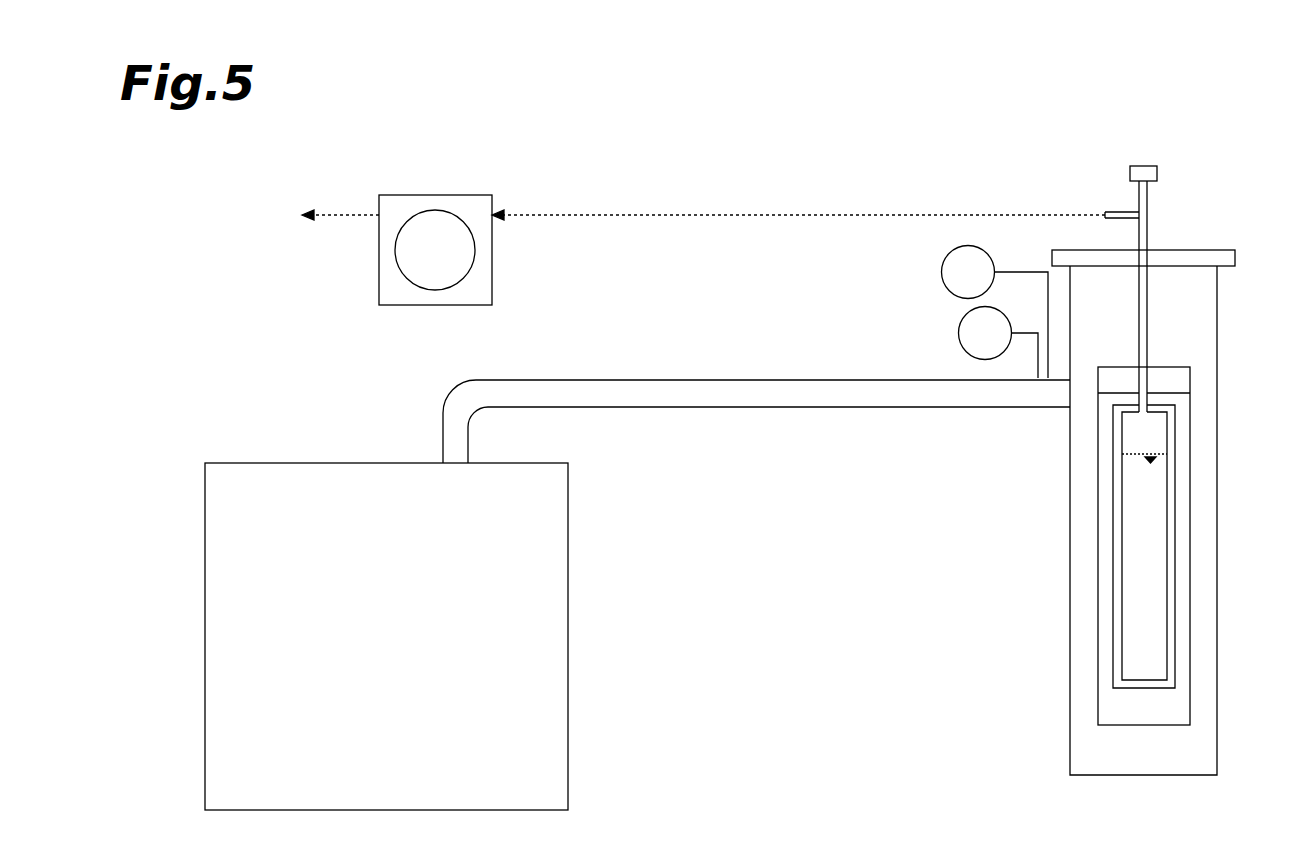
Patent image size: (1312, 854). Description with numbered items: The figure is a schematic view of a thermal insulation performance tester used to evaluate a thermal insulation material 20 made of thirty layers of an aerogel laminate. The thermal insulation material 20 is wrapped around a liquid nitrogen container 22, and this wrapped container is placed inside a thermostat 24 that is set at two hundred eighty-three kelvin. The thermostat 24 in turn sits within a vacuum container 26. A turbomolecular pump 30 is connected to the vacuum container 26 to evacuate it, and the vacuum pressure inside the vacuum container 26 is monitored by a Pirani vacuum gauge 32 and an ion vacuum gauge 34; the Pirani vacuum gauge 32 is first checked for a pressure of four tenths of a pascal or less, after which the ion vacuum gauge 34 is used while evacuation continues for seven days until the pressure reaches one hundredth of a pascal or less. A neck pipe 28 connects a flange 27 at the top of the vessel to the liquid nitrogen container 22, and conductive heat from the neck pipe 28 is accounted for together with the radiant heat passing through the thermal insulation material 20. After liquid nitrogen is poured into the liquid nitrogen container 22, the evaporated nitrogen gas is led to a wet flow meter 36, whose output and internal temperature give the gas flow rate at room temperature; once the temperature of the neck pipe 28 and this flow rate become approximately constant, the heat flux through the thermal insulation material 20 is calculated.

The thermal insulation material 20 is at (1113, 665).
The liquid nitrogen container 22 is at (1133, 576).
The thermostat 24 is at (1190, 490).
The vacuum container 26 is at (1217, 613).
The flange 27 is at (1190, 250).
The neck pipe 28 is at (1147, 347).
The turbomolecular pump 30 is at (262, 462).
The Pirani vacuum gauge 32 is at (958, 333).
The ion vacuum gauge 34 is at (941, 272).
The wet flow meter 36 is at (406, 195).